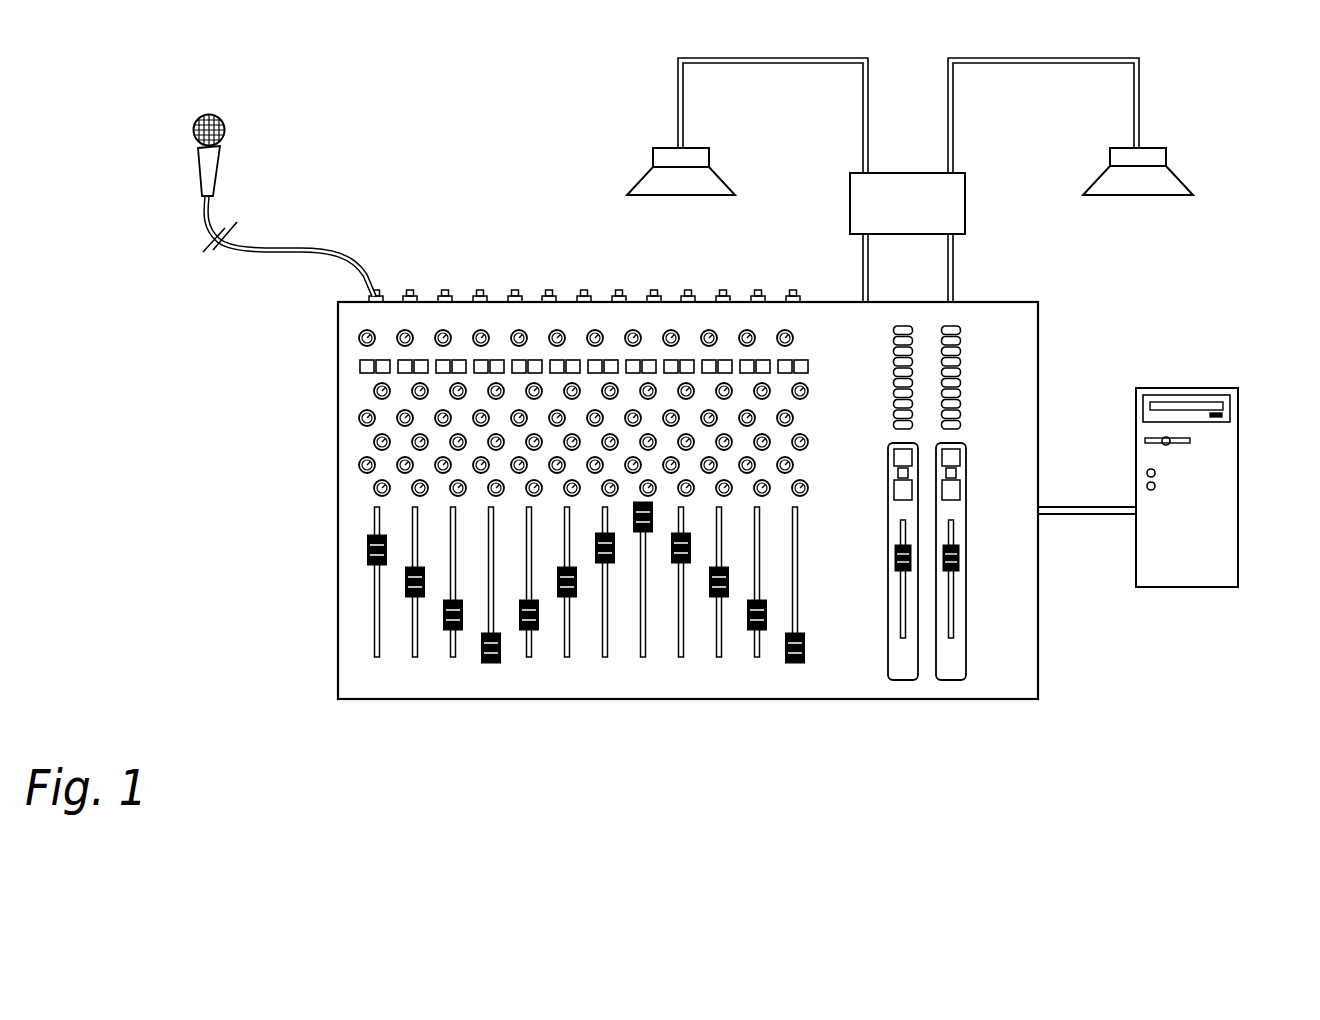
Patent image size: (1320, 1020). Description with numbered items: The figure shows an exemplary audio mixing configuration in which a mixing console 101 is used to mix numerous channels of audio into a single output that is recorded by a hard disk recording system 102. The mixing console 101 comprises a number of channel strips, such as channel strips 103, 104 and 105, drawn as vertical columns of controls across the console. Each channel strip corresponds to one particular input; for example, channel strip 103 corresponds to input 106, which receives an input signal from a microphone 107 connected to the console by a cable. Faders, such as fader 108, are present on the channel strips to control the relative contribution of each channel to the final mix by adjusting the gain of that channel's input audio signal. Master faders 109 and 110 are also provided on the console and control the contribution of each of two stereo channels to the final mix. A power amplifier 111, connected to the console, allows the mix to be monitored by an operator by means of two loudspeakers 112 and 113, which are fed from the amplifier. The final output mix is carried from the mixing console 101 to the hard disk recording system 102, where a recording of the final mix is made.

The mixing console 101 is at (1027, 586).
The hard disk recording system 102 is at (1232, 573).
The channel strip 103 is at (377, 673).
The channel strip 104 is at (415, 673).
The channel strip 105 is at (453, 673).
The input 106 is at (380, 290).
The microphone 107 is at (213, 115).
The fader 108 is at (363, 572).
The master fader 109 is at (883, 585).
The master fader 110 is at (970, 586).
The power amplifier 111 is at (960, 200).
The loudspeaker 112 is at (655, 150).
The loudspeaker 113 is at (1114, 150).